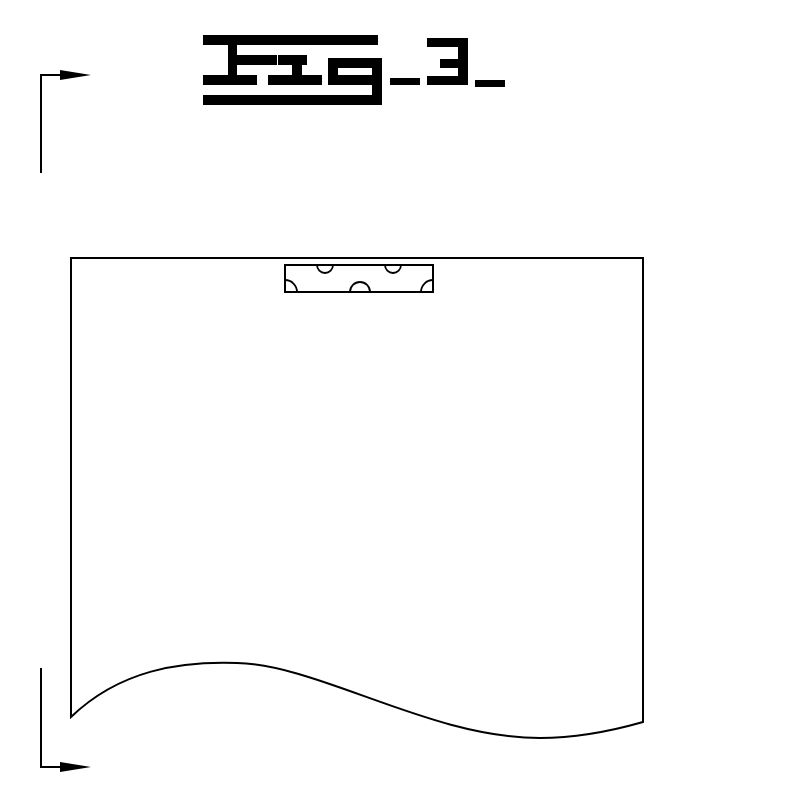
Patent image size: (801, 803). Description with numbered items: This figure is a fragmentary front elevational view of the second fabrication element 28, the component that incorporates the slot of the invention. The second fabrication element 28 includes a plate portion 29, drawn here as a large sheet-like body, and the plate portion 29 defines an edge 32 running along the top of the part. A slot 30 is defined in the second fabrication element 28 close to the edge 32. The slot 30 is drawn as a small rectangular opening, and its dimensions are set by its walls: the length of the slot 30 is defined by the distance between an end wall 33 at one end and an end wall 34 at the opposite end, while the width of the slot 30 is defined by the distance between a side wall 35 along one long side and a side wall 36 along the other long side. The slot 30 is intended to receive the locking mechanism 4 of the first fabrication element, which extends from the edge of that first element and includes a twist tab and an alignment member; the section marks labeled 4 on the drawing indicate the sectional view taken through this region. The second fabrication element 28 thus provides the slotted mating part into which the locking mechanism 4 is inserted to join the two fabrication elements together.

The locking mechanism 4 is at (51, 425).
The second fabrication element 28 is at (422, 424).
The plate portion 29 is at (619, 348).
The slot 30 is at (360, 289).
The edge 32 is at (237, 258).
The end wall 33 is at (303, 292).
The end wall 34 is at (418, 292).
The side wall 35 is at (322, 273).
The side wall 36 is at (378, 292).